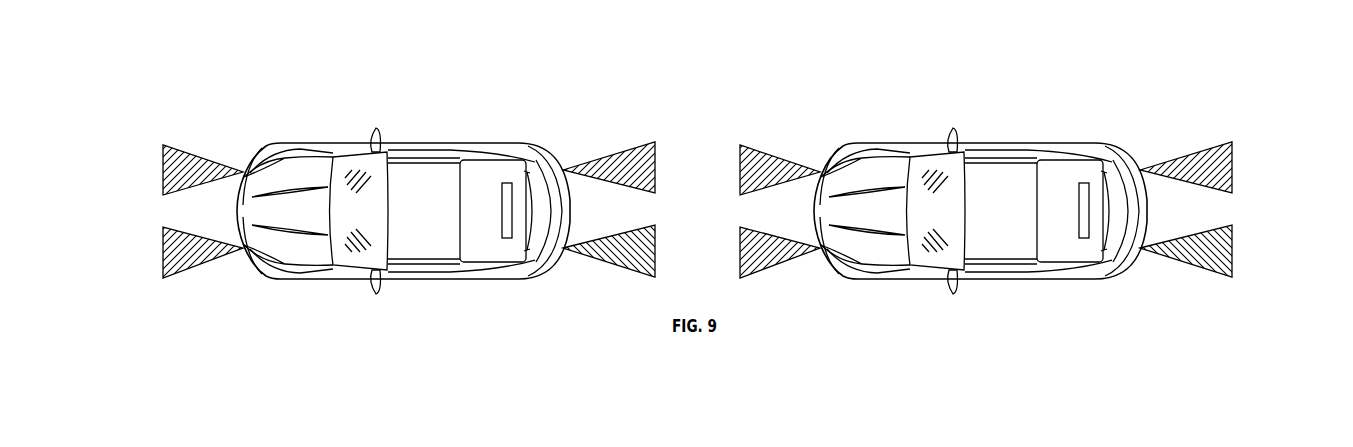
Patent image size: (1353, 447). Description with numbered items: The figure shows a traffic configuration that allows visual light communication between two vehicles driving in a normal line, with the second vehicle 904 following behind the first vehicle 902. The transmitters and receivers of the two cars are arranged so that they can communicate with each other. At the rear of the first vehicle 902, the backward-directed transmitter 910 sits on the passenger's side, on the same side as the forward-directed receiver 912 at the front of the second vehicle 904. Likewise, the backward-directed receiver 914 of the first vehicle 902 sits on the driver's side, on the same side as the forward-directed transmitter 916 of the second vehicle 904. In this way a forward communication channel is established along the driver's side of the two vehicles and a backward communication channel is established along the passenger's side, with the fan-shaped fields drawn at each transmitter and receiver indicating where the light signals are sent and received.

The first vehicle 902 is at (409, 180).
The second vehicle 904 is at (986, 178).
The backward-directed transmitter (Tx-back) 910 is at (612, 152).
The backward-directed receiver (Rx-back) 914 is at (613, 265).
The forward-directed receiver (Rx-front) 912 is at (762, 151).
The forward-directed transmitter (Tx-front) 916 is at (757, 230).